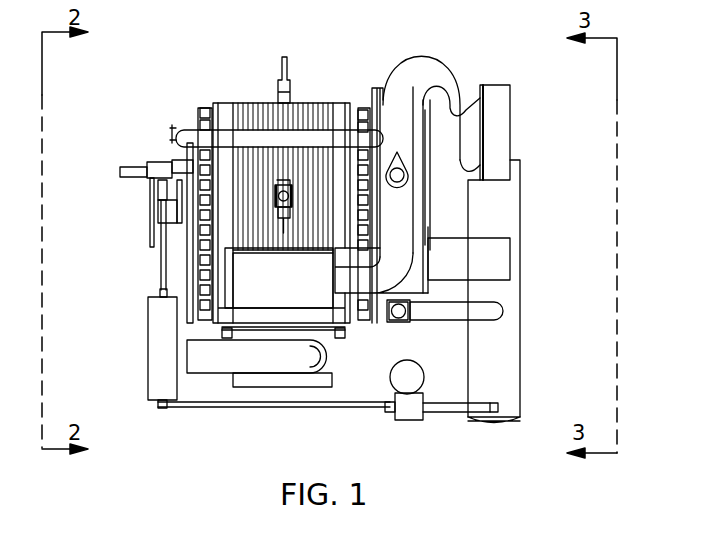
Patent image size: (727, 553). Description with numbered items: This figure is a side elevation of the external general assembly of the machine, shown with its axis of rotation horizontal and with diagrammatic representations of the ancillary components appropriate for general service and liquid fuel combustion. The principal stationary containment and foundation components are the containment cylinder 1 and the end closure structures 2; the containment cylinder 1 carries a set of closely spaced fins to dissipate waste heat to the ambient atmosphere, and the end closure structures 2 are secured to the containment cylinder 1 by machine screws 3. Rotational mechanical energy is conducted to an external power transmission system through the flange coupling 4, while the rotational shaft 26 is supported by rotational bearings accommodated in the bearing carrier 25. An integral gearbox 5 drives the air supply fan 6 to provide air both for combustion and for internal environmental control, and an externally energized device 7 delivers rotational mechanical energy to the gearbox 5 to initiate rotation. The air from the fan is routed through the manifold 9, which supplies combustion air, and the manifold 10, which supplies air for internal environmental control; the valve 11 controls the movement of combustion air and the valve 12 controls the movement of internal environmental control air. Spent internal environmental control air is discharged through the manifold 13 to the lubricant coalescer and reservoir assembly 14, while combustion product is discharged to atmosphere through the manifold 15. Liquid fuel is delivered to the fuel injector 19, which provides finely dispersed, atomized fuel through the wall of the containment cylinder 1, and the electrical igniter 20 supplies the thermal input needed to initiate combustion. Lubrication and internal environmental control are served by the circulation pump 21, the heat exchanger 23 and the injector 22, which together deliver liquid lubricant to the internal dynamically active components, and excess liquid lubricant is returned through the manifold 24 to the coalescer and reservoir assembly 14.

The containment cylinder 1 is at (303, 103).
The end closure structures 2 is at (380, 78).
The machine screws 3 is at (198, 210).
The flange coupling 4 is at (150, 228).
The integral gearbox 5 is at (430, 200).
The air supply fan 6 is at (510, 147).
The externally energized device 7 is at (510, 243).
The manifold 9 is at (272, 310).
The manifold 10 is at (200, 128).
The valve 11 is at (397, 153).
The valve 12 is at (176, 140).
The manifold 13 is at (500, 305).
The lubricant coalescer and reservoir assembly 14 is at (520, 377).
The manifold 15 is at (265, 388).
The fuel injector 19 is at (281, 187).
The electrical igniter 20 is at (287, 78).
The circulation pump 21 is at (421, 418).
The injector 22 is at (143, 166).
The heat exchanger 23 is at (148, 347).
The manifold 24 is at (342, 340).
The bearing carrier 25 is at (193, 263).
The rotational shaft 26 is at (182, 225).